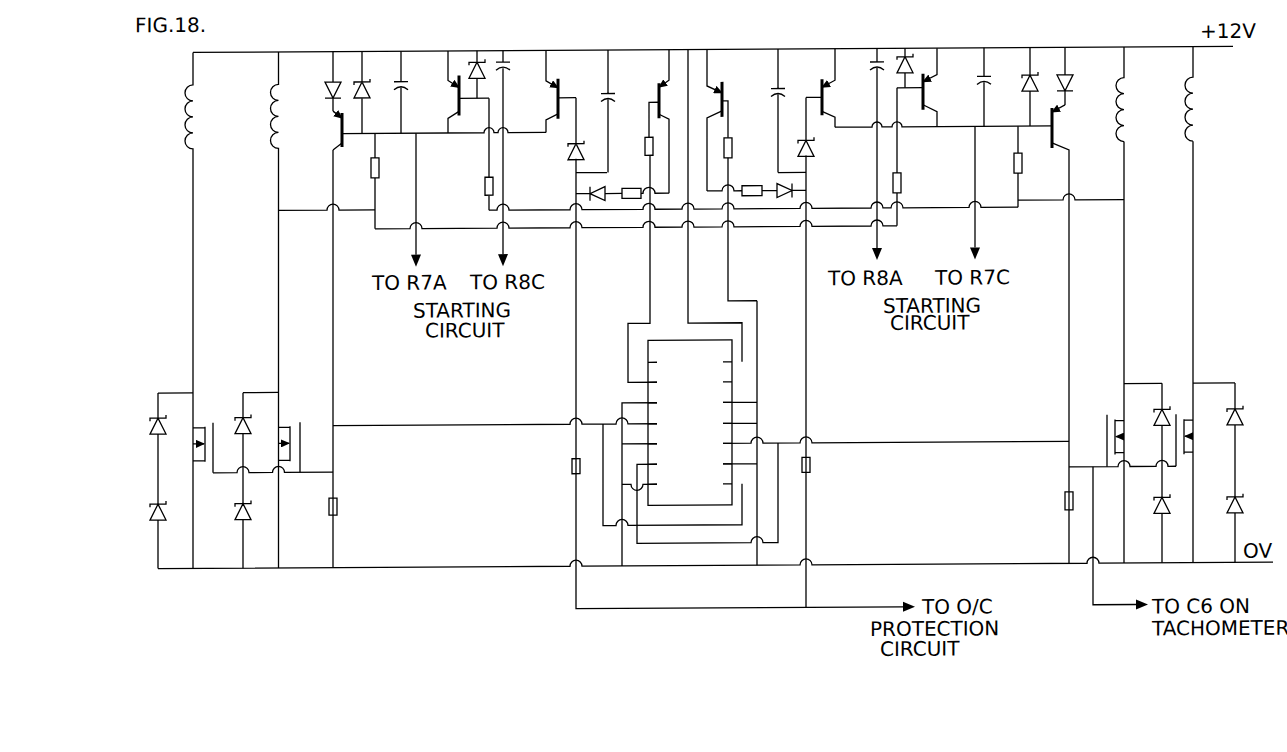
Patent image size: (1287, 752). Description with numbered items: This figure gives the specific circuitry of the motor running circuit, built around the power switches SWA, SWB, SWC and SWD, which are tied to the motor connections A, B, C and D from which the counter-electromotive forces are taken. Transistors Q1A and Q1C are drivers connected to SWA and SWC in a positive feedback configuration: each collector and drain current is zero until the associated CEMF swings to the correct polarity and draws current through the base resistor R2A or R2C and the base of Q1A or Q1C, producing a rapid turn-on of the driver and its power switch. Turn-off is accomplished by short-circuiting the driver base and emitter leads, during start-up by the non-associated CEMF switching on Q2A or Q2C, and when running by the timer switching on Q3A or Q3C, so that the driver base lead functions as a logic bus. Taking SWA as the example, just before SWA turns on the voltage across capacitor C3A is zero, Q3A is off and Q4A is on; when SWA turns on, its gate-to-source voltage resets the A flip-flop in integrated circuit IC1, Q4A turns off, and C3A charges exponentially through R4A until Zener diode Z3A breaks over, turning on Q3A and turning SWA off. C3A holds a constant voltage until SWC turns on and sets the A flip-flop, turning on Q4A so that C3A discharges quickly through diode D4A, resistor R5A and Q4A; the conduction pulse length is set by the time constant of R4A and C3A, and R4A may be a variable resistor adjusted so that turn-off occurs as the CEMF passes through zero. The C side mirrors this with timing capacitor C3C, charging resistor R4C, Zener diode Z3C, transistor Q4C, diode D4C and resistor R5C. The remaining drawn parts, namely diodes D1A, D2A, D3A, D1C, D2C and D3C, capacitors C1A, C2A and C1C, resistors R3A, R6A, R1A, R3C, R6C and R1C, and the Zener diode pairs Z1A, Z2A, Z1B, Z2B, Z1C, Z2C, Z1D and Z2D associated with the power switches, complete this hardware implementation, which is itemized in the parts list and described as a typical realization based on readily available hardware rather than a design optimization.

The motor winding coil A is at (261, 310).
The motor winding coil B is at (174, 310).
The motor winding coil C is at (1128, 94).
The motor winding coil D is at (1197, 94).
The diode D1A is at (318, 82).
The zener diode D2A is at (363, 64).
The zener diode D3A is at (476, 61).
The diode D4A is at (597, 202).
The capacitor C1A is at (417, 92).
The capacitor C2A is at (505, 61).
The timing capacitor C3A is at (594, 92).
The driver transistor Q1A is at (340, 136).
The turn-off transistor Q2A is at (450, 112).
The timer turn-off transistor Q3A is at (542, 91).
The discharge transistor Q4A is at (652, 86).
The base resistor R2A is at (373, 178).
The resistor R3A is at (466, 154).
The discharge resistor R5A is at (628, 212).
The resistor R6A is at (644, 143).
The charging resistor R4A is at (553, 466).
The resistor R1A is at (350, 510).
The Zener diode Z3A is at (557, 141).
The diode D1C is at (1068, 75).
The zener diode D2C is at (1032, 75).
The zener diode D3C is at (906, 58).
The diode D4C is at (785, 204).
The capacitor C1C is at (983, 70).
The timing capacitor C3C is at (798, 78).
The driver transistor Q1C is at (1060, 334).
The turn-off transistor Q2C is at (931, 87).
The timer turn-off transistor Q3C is at (835, 88).
The discharge transistor Q4C is at (732, 77).
The base resistor R2C is at (1016, 178).
The resistor R3C is at (920, 157).
The discharge resistor R5C is at (752, 203).
The resistor R6C is at (734, 146).
The charging resistor R4C is at (830, 464).
The resistor R1C is at (1047, 503).
The Zener diode Z3C is at (827, 134).
The integrated circuit IC1 is at (690, 411).
The power switch SWA is at (261, 420).
The switching transistor SWB is at (176, 421).
The power switch SWC is at (1141, 412).
The switching transistor SWD is at (1212, 412).
The zener diode Z1A is at (225, 527).
The zener diode Z2A is at (224, 448).
The zener diode Z1B is at (141, 527).
The zener diode Z2B is at (137, 448).
The zener diode Z1C is at (1168, 504).
The zener diode Z2C is at (1156, 411).
The zener diode Z1D is at (1241, 510).
The zener diode Z2D is at (1240, 420).